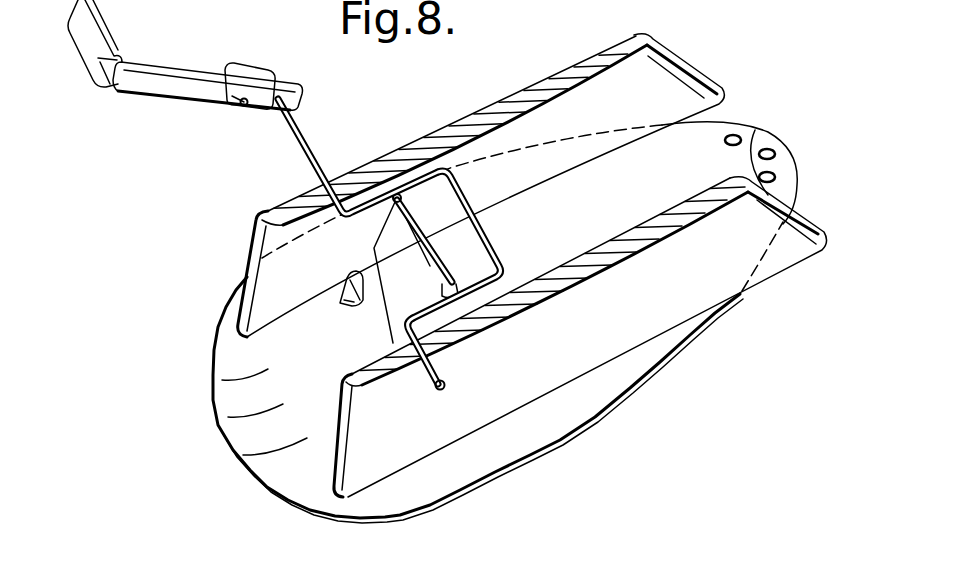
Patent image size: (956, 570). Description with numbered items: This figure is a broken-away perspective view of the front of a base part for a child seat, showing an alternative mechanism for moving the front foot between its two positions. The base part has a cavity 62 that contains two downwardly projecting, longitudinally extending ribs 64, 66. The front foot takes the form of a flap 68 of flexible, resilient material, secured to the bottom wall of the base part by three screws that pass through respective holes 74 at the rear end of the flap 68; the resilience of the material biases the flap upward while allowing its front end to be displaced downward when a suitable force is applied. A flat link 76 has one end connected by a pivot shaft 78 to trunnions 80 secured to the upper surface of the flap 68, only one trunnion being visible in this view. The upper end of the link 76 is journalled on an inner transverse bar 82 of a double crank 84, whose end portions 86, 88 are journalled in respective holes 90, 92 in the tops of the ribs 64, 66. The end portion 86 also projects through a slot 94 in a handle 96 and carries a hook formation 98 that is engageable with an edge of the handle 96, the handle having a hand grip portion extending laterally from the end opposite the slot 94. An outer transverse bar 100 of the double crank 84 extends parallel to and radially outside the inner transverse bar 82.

The cavity 62 is at (481, 181).
The rib 64 is at (497, 135).
The rib 66 is at (624, 330).
The flap 68 is at (232, 430).
The holes 74 is at (772, 147).
The flat link 76 is at (378, 240).
The pivot shaft 78 is at (345, 305).
The trunnions 80 is at (346, 282).
The inner transverse bar 82 is at (472, 298).
The double crank 84 is at (405, 268).
The end portion 86 is at (302, 143).
The end portion 88 is at (457, 365).
The hole 90 is at (334, 213).
The hole 92 is at (424, 356).
The slot 94 is at (222, 108).
The handle 96 is at (171, 85).
The hook formation 98 is at (222, 66).
The outer transverse bar 100 is at (477, 202).